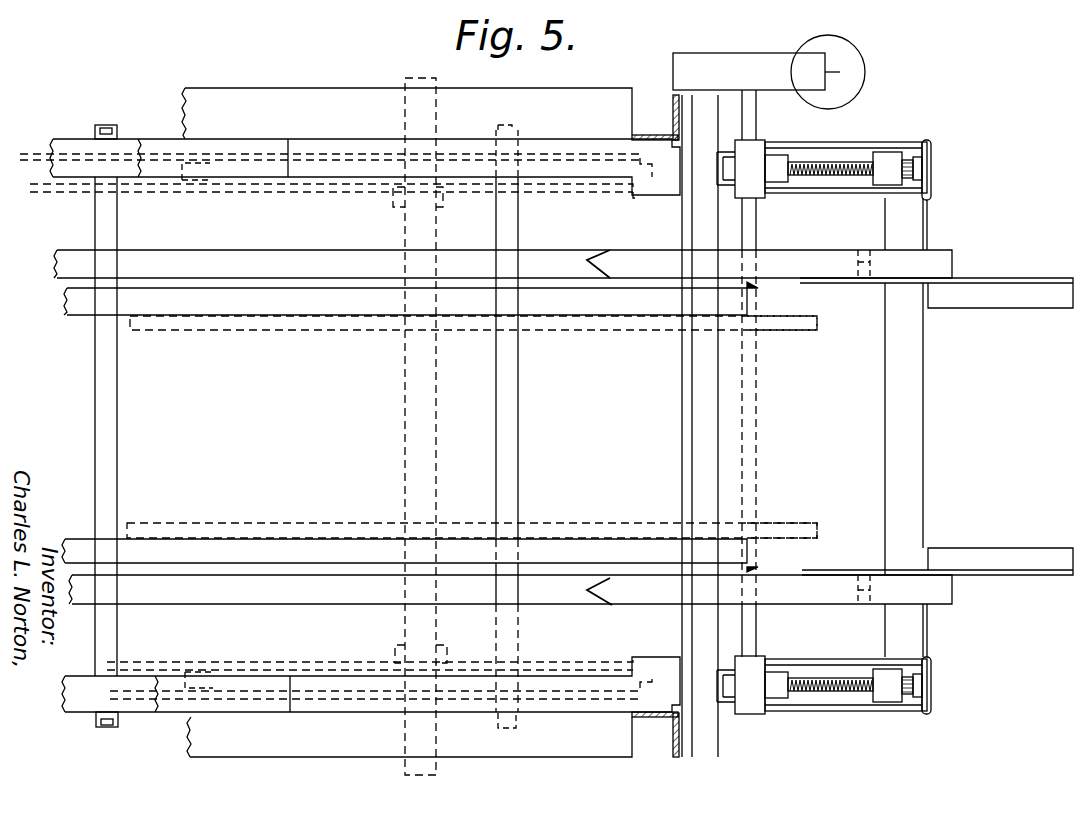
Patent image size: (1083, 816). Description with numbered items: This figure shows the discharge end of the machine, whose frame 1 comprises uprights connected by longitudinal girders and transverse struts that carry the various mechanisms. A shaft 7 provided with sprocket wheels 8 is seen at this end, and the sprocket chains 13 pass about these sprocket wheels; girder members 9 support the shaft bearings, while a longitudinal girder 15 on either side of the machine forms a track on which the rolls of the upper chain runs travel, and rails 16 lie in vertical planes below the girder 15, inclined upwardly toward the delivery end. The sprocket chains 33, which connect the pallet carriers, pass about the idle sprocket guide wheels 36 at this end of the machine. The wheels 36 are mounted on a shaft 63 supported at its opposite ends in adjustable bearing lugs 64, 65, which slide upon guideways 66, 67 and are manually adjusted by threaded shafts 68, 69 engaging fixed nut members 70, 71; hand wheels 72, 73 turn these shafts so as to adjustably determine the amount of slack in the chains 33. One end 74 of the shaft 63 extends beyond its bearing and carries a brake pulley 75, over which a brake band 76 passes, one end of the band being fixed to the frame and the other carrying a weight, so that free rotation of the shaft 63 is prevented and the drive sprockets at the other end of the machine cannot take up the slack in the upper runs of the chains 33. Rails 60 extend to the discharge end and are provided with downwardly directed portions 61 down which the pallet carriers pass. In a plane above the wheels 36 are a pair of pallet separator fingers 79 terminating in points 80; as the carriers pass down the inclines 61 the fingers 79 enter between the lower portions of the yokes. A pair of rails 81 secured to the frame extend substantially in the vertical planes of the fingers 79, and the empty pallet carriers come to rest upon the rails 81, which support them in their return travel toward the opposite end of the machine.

The frame 1 is at (673, 738).
The shaft 7 is at (410, 376).
The sprocket wheels 8 is at (312, 170).
The girder members 9 is at (258, 96).
The sprocket chains 13 is at (38, 150).
The longitudinal girder 15 is at (220, 168).
The rails 16 is at (482, 170).
The sprocket chains 33 is at (236, 333).
The idle sprocket wheels 36 is at (808, 330).
The rails 60 is at (333, 304).
The downwardly directed portions 61 is at (690, 302).
The shaft 63 is at (757, 422).
The adjustable bearing lug 64 is at (773, 160).
The adjustable bearing lug 65 is at (773, 673).
The guideway 66 is at (858, 152).
The guideway 67 is at (822, 667).
The threaded shaft 68 is at (832, 163).
The threaded shaft 69 is at (822, 692).
The fixed nut member 70 is at (895, 155).
The fixed nut member 71 is at (890, 695).
The hand wheel 72 is at (933, 148).
The hand wheel 73 is at (931, 665).
The shaft end 74 is at (755, 113).
The brake pulley 75 is at (765, 52).
The brake band 76 is at (702, 68).
The pallet separator fingers 79 is at (781, 260).
The points 80 is at (587, 260).
The rails 81 is at (342, 255).